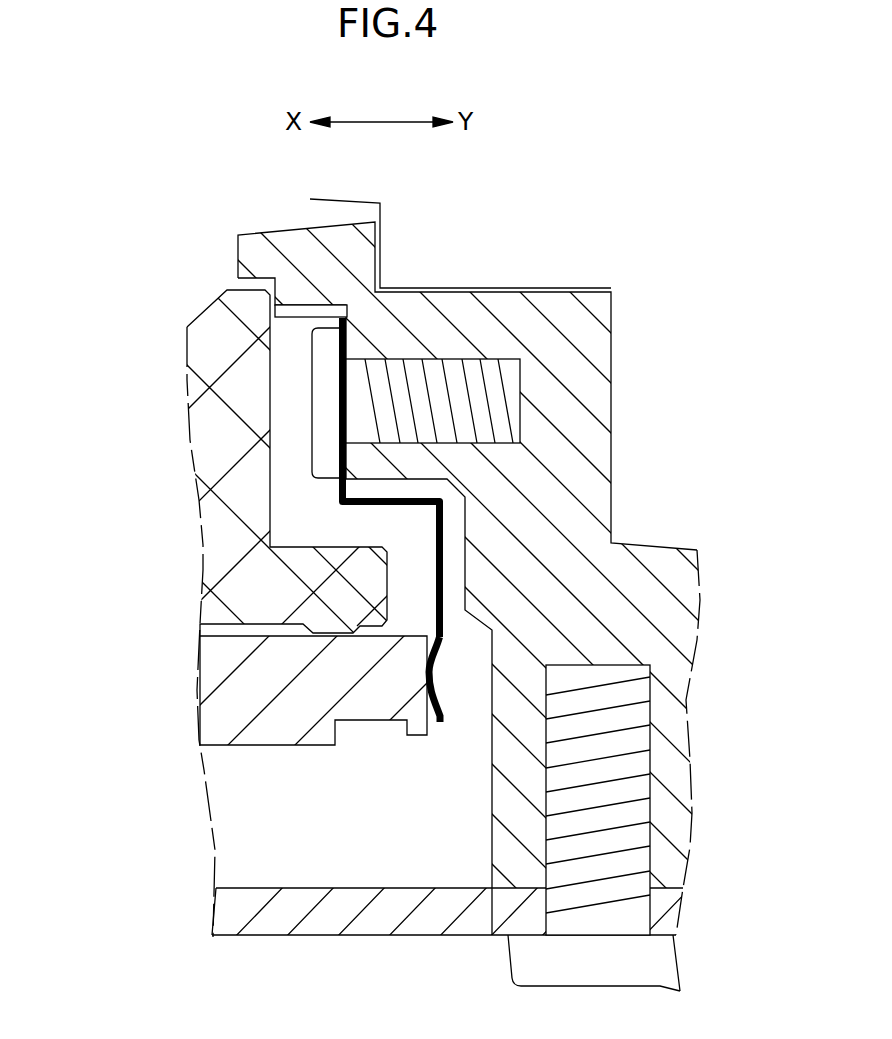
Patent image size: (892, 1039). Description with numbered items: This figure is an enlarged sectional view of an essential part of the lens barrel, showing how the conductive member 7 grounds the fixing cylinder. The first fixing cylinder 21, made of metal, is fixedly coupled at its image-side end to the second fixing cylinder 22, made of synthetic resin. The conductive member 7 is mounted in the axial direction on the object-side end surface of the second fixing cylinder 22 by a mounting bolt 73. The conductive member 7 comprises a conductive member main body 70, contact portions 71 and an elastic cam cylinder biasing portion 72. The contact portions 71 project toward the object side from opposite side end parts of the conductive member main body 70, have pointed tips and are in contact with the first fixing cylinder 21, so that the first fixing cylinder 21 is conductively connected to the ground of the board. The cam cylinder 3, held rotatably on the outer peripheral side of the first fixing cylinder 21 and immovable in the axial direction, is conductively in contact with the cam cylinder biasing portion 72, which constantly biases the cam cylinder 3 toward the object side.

The cam cylinder 3 is at (227, 719).
The conductive member 7 is at (431, 496).
The first fixing cylinder 21 is at (190, 437).
The second fixing cylinder 22 is at (613, 345).
The conductive member main body 70 is at (339, 488).
The contact portions 71 is at (312, 383).
The cam cylinder biasing portion 72 is at (427, 670).
The mounting bolt 73 is at (470, 357).